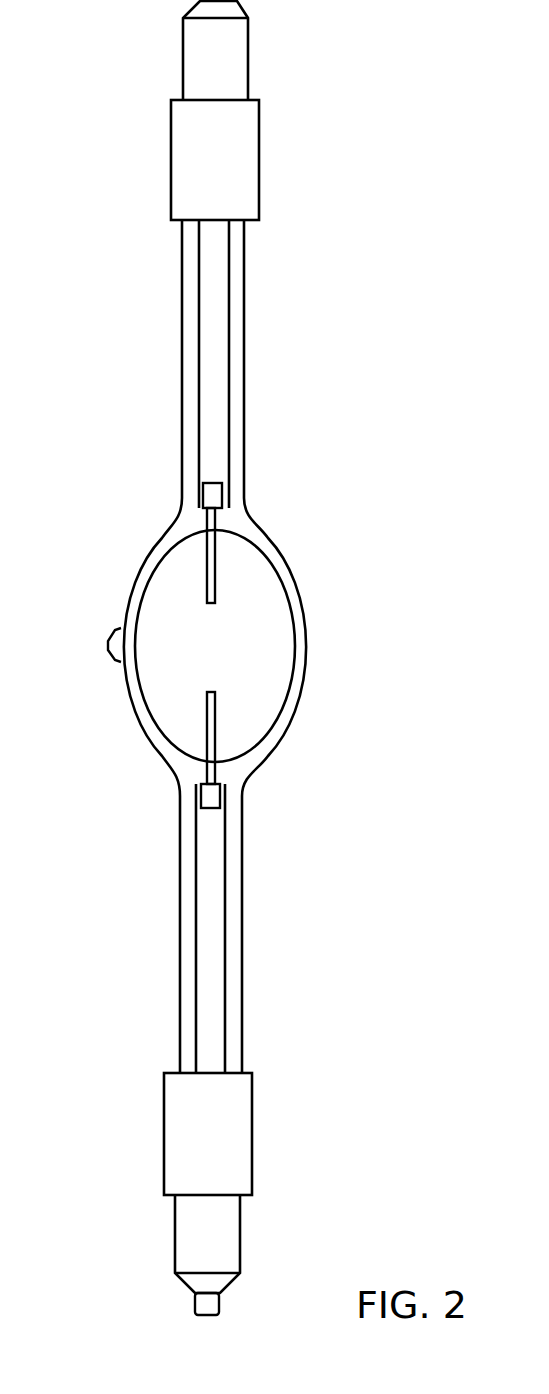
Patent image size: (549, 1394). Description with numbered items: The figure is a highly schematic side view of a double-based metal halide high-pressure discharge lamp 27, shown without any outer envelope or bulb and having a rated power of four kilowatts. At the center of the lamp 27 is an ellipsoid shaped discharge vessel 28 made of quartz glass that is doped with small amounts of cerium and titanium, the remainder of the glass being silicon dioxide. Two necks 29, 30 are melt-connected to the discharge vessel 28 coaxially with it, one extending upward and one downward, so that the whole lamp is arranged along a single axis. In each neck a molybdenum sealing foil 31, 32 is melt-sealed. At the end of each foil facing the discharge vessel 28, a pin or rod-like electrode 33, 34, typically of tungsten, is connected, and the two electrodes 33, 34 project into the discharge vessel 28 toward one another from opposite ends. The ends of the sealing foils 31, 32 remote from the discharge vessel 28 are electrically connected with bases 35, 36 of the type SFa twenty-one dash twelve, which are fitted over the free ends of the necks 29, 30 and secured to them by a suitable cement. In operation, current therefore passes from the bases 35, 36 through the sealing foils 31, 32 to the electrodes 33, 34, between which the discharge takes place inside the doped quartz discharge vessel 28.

The metal halide high-pressure discharge lamp 27 is at (133, 345).
The discharge vessel 28 is at (275, 747).
The neck 29 is at (244, 424).
The neck 30 is at (241, 887).
The molybdenum sealing foil 31 is at (212, 338).
The molybdenum sealing foil 32 is at (205, 1002).
The electrode 33 is at (320, 543).
The electrode 34 is at (319, 750).
The base 35 is at (225, 175).
The base 36 is at (225, 1140).